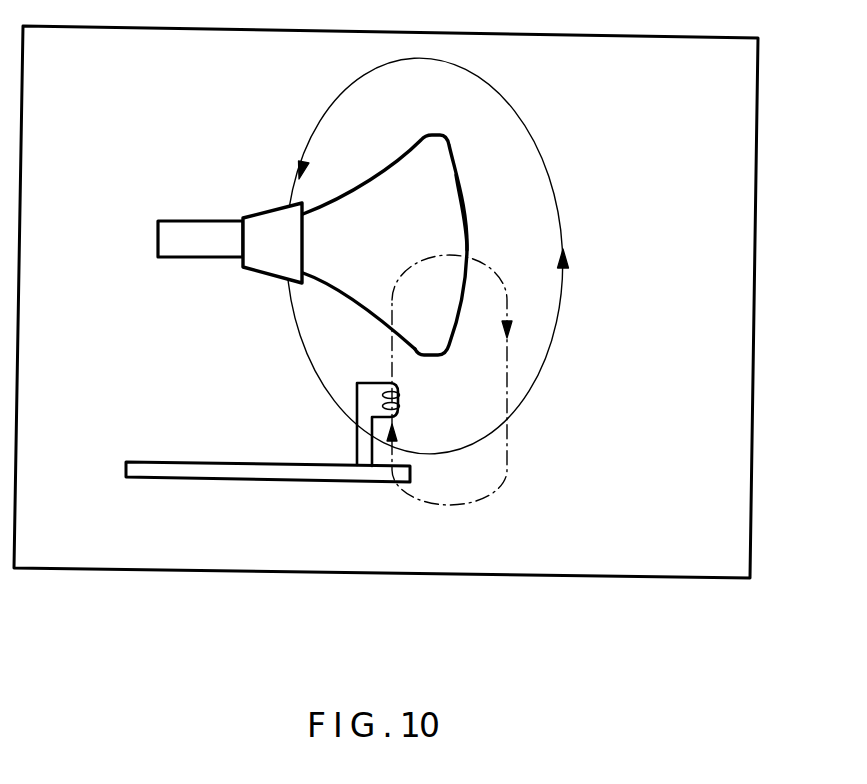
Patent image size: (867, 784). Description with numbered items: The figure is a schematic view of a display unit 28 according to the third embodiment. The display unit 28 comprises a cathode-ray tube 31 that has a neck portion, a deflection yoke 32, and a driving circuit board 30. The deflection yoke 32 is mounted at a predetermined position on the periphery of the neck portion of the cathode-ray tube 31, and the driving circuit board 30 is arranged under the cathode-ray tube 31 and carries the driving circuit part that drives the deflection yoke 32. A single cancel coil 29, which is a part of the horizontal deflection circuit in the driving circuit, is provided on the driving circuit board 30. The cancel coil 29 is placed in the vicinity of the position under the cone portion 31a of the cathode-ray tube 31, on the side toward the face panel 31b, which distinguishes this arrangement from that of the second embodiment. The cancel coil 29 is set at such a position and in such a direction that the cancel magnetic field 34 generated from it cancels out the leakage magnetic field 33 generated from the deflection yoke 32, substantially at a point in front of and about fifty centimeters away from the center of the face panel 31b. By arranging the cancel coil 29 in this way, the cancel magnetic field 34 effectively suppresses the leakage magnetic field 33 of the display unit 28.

The display unit 28 is at (757, 557).
The cancel coil 29 is at (405, 397).
The driving circuit board 30 is at (202, 472).
The cathode-ray tube 31 is at (394, 229).
The cone portion 31a is at (352, 297).
The face panel 31b is at (467, 222).
The deflection yoke 32 is at (262, 265).
The leakage magnetic field 33 is at (552, 168).
The cancel magnetic field 34 is at (497, 483).